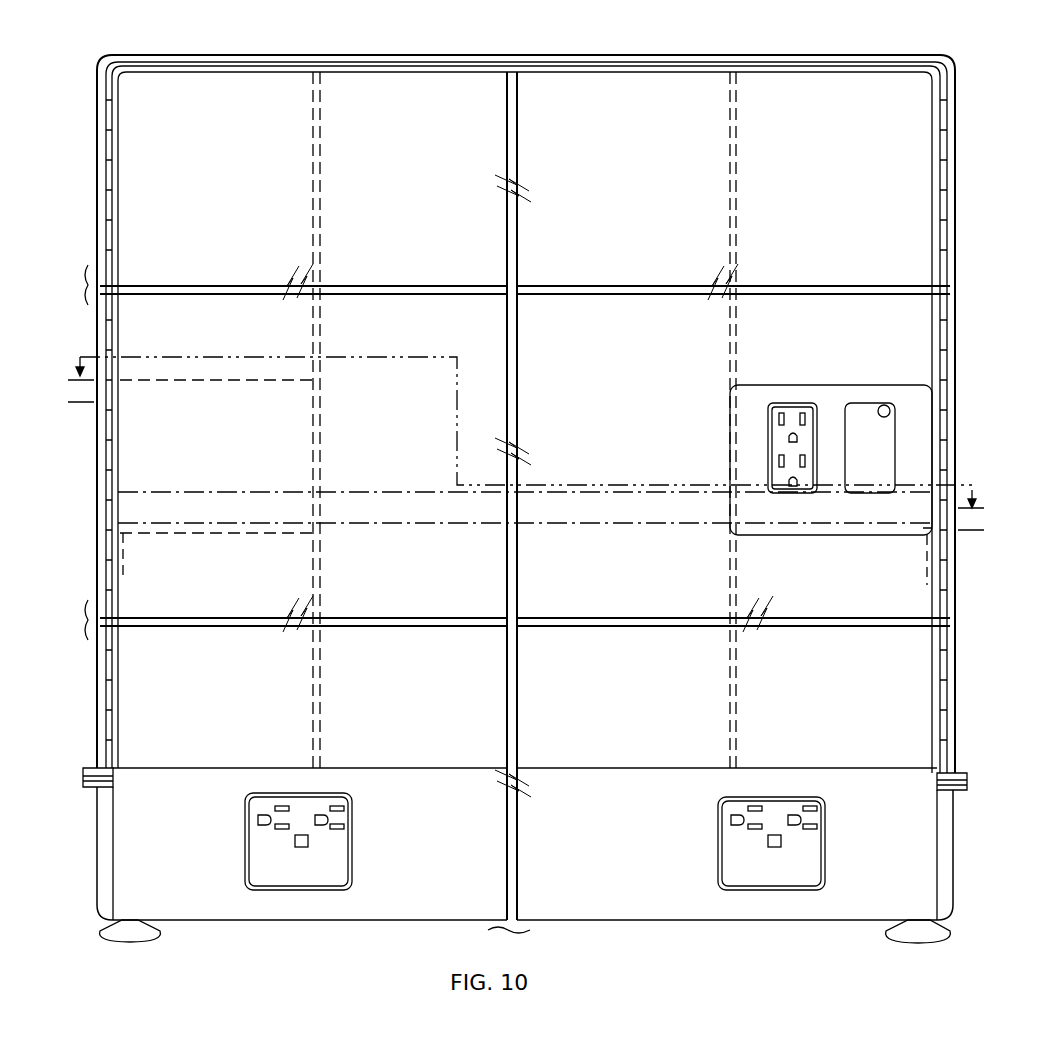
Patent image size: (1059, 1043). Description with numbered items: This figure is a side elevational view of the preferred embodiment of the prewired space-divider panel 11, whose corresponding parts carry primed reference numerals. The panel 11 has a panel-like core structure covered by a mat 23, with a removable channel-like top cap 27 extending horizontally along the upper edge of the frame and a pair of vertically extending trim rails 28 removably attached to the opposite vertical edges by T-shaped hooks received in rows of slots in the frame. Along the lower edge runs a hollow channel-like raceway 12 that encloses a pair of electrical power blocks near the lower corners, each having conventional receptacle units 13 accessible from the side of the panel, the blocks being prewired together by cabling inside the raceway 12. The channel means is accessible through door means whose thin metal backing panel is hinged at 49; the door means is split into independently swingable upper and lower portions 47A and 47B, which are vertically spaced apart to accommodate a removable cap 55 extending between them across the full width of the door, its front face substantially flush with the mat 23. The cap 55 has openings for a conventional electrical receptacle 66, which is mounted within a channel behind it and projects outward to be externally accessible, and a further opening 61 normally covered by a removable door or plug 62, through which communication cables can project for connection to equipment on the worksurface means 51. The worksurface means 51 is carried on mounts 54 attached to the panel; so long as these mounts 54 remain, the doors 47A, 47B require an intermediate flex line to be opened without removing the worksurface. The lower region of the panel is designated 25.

The panel 11 is at (414, 48).
The raceway 12 is at (390, 874).
The receptacle unit 13 is at (778, 877).
The mat 23 is at (597, 124).
The lower panel section 25 is at (725, 697).
The top cap 27 is at (716, 56).
The trim rail 28 is at (105, 179).
The upper door portion 47A is at (262, 100).
The lower door portion 47B is at (227, 735).
The hinge 49 is at (320, 199).
The worksurface means 51 is at (598, 510).
The mount 54 is at (124, 548).
The cap 55 is at (320, 437).
The opening 61 is at (897, 410).
The removable door or plug 62 is at (884, 434).
The electrical receptacle 66 is at (790, 414).